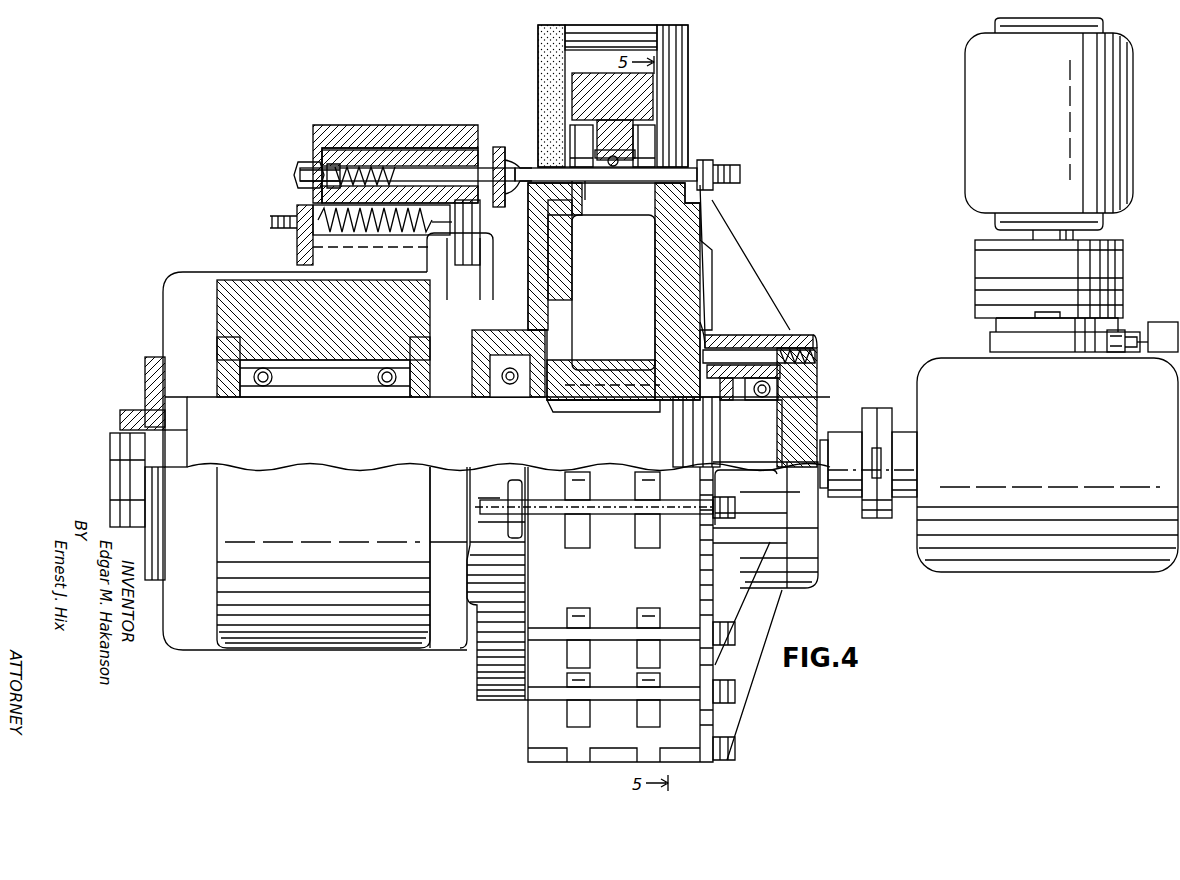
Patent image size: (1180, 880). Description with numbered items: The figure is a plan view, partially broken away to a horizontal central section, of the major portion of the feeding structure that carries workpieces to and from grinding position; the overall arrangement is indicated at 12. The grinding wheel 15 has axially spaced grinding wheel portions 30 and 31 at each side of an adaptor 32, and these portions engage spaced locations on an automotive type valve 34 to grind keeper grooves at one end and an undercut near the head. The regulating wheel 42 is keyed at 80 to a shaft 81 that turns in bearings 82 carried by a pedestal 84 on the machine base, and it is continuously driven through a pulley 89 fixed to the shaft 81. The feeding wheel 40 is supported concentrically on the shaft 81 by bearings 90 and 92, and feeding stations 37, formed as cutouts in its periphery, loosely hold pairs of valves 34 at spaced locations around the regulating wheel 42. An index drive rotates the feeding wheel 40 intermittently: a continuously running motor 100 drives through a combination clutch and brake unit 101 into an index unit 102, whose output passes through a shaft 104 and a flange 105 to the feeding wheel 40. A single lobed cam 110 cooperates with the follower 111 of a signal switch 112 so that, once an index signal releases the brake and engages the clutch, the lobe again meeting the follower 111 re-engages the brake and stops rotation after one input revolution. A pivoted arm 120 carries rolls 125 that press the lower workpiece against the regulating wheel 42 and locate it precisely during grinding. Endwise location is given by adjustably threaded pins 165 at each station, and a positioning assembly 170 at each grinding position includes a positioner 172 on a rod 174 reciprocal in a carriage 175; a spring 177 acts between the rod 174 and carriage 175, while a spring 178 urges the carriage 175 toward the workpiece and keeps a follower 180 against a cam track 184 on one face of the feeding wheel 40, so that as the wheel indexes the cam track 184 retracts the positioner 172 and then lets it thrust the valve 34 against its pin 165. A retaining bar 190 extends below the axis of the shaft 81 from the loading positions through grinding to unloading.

The drive assembly 12 is at (818, 180).
The grinding wheel 15 is at (536, 42).
The grinding wheel portion 30 is at (550, 82).
The grinding wheel portion 31 is at (672, 78).
The adaptor 32 is at (612, 40).
The valve 34 is at (587, 183).
The feeding station 37 is at (575, 535).
The feeding wheel 40 is at (745, 300).
The regulating wheel 42 is at (620, 291).
The key 80 is at (595, 390).
The shaft 81 is at (570, 449).
The bearings 82 is at (340, 365).
The pedestal 84 is at (245, 302).
The pulley 89 is at (145, 372).
The bearing 90 is at (510, 383).
The bearing 92 is at (760, 398).
The motor 100 is at (983, 74).
The combination clutch and brake unit 101 is at (1108, 268).
The index unit 102 is at (1065, 553).
The shaft 104 is at (840, 440).
The flange 105 is at (820, 380).
The single lobed cam 110 is at (1100, 318).
The follower 111 is at (1130, 352).
The signal switch 112 is at (1165, 352).
The arm 120 is at (640, 105).
The rolls 125 is at (578, 138).
The pin 165 is at (700, 165).
The positioning assembly 170 is at (296, 166).
The positioner 172 is at (483, 150).
The rod 174 is at (417, 170).
The carriage 175 is at (437, 145).
The spring 177 is at (370, 162).
The spring 178 is at (380, 236).
The follower 180 is at (455, 272).
The cam track 184 is at (465, 228).
The retaining bar 190 is at (613, 167).